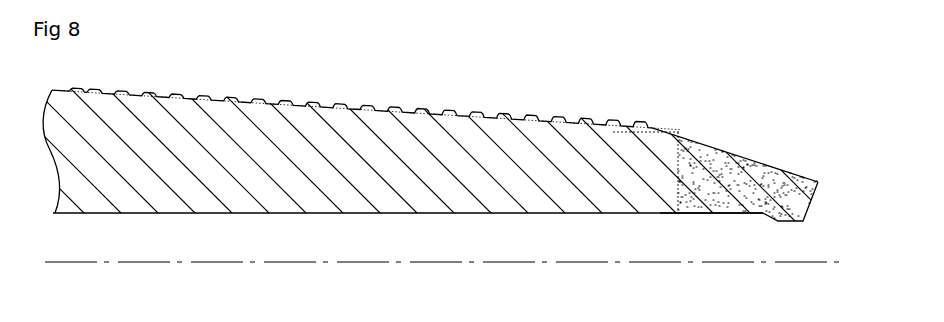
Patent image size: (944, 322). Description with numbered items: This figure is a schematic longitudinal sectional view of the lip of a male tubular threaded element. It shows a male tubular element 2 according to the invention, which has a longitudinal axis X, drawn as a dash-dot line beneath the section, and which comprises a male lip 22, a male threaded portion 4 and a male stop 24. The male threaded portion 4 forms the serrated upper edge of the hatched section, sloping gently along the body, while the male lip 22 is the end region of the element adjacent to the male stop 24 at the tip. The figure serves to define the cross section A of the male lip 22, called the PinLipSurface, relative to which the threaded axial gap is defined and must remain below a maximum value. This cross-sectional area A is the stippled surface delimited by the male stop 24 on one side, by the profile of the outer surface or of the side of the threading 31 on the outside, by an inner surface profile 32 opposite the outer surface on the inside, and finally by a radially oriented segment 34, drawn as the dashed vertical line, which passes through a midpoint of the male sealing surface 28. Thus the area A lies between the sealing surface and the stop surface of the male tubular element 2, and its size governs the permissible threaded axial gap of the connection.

The male tubular element 2 is at (158, 162).
The male threaded portion 4 is at (397, 105).
The male lip 22 is at (340, 157).
The male stop 24 is at (818, 194).
The male sealing surface 28 is at (680, 146).
The outer surface or side of the threading 31 is at (748, 160).
The inner surface profile 32 is at (700, 213).
The radially oriented segment 34 is at (678, 186).
The cross section of the male lip A is at (712, 176).
The longitudinal axis X is at (800, 262).